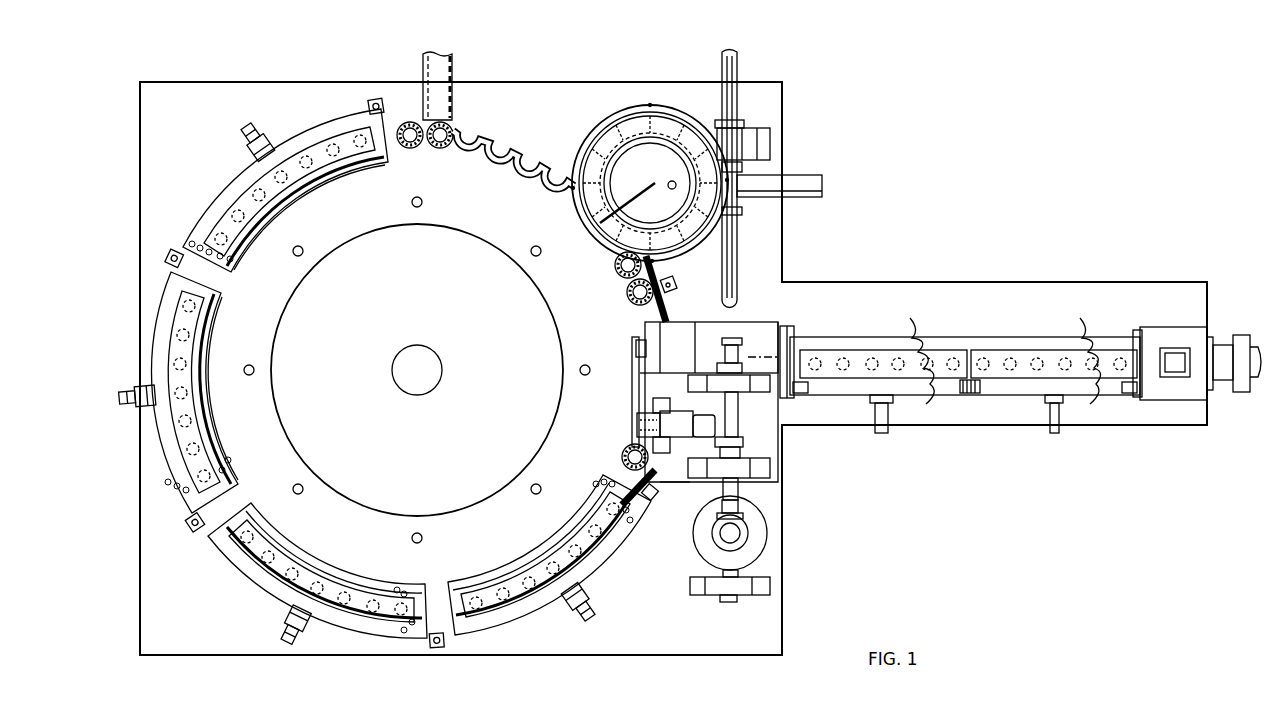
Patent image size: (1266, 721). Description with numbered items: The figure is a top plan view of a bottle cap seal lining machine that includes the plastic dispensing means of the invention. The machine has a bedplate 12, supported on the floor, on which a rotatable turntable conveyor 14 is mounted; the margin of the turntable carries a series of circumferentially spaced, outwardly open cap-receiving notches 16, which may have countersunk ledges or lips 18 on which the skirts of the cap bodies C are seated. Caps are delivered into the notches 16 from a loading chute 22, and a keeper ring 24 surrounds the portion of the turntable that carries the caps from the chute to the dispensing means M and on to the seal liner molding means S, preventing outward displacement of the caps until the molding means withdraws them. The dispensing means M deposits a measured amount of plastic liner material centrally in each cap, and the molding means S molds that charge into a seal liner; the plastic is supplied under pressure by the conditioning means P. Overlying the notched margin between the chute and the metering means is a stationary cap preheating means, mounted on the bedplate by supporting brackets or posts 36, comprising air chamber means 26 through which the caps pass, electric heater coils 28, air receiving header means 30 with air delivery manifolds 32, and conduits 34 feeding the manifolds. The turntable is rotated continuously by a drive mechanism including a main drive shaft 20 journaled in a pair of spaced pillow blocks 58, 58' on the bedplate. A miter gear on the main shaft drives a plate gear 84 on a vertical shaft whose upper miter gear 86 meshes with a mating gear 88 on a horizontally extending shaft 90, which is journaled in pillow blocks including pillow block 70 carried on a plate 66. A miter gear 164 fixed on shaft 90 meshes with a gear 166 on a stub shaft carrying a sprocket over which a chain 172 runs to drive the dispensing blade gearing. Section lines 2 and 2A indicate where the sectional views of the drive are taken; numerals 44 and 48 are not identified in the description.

The bedplate 12 is at (226, 652).
The turntable conveyor 14 is at (318, 492).
The cap-receiving notches 16 is at (464, 130).
The ledges or lips 18 is at (494, 150).
The main drive shaft 20 is at (738, 262).
The loading chute 22 is at (453, 70).
The keeper ring 24 is at (670, 304).
The air chamber means 26 is at (318, 181).
The electric heater coils 28 is at (291, 181).
The air receiving header means 30 is at (262, 200).
The air delivery manifolds 32 is at (330, 126).
The conduits 34 is at (252, 130).
The supporting brackets or posts 36 is at (384, 100).
The end plate 44 is at (792, 398).
The gear 48 is at (729, 383).
The pillow block 58 is at (771, 150).
The pillow block 58' is at (762, 584).
The plate 66 is at (688, 480).
The pillow block 70 is at (771, 468).
The plate gear 84 is at (702, 548).
The miter gear 86 is at (750, 534).
The mating gear 88 is at (745, 516).
The horizontally extending shaft 90 is at (740, 418).
The miter gear 164 is at (744, 440).
The gear 166 is at (712, 416).
The chain 172 is at (630, 382).
The cap bodies C is at (438, 149).
The dispensing means M is at (626, 408).
The conditioning means P is at (990, 420).
The seal liner molding means S is at (666, 102).
The section line 2 is at (608, 357).
The section line 2A is at (614, 461).